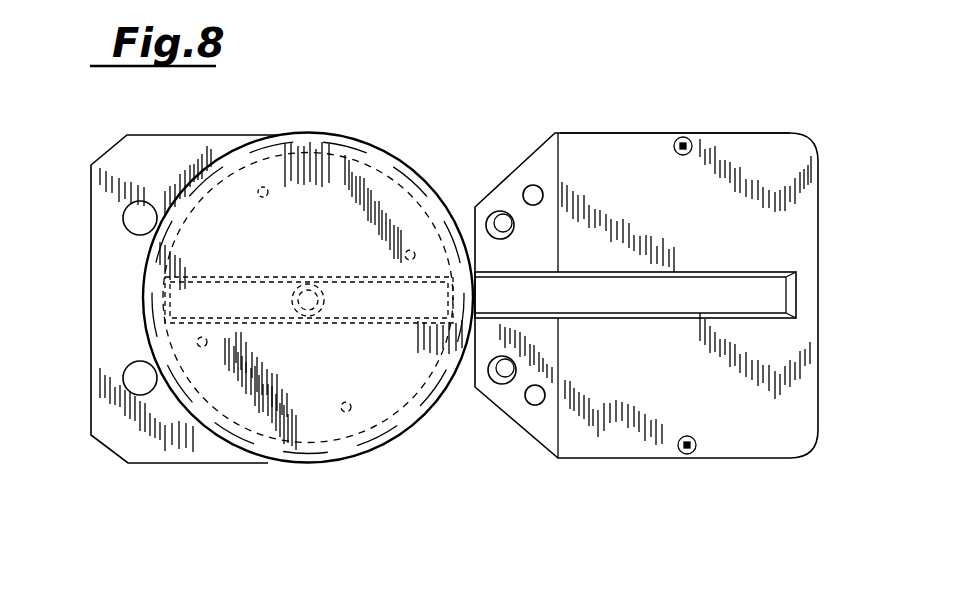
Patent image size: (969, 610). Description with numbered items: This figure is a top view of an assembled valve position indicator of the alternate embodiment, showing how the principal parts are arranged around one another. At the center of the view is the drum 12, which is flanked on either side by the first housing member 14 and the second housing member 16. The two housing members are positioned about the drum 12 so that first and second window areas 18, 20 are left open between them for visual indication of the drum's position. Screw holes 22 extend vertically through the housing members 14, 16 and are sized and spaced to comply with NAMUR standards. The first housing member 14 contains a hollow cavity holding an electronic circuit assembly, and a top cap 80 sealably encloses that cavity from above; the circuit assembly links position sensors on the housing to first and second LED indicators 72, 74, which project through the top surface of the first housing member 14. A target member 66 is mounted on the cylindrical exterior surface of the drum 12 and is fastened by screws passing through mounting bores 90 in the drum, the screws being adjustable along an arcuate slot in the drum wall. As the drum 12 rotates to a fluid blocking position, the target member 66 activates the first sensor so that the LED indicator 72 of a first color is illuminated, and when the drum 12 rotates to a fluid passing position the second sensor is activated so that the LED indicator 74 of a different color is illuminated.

The drum 12 is at (261, 423).
The first housing member 14 is at (795, 240).
The second housing member 16 is at (112, 291).
The first window area 18 is at (458, 145).
The second window area 20 is at (371, 482).
The screw holes 22 is at (135, 378).
The target member 66 is at (357, 138).
The first LED indicator 72 is at (540, 188).
The second LED indicator 74 is at (531, 397).
The top cap 80 is at (637, 148).
The mounting bores 90 is at (262, 198).